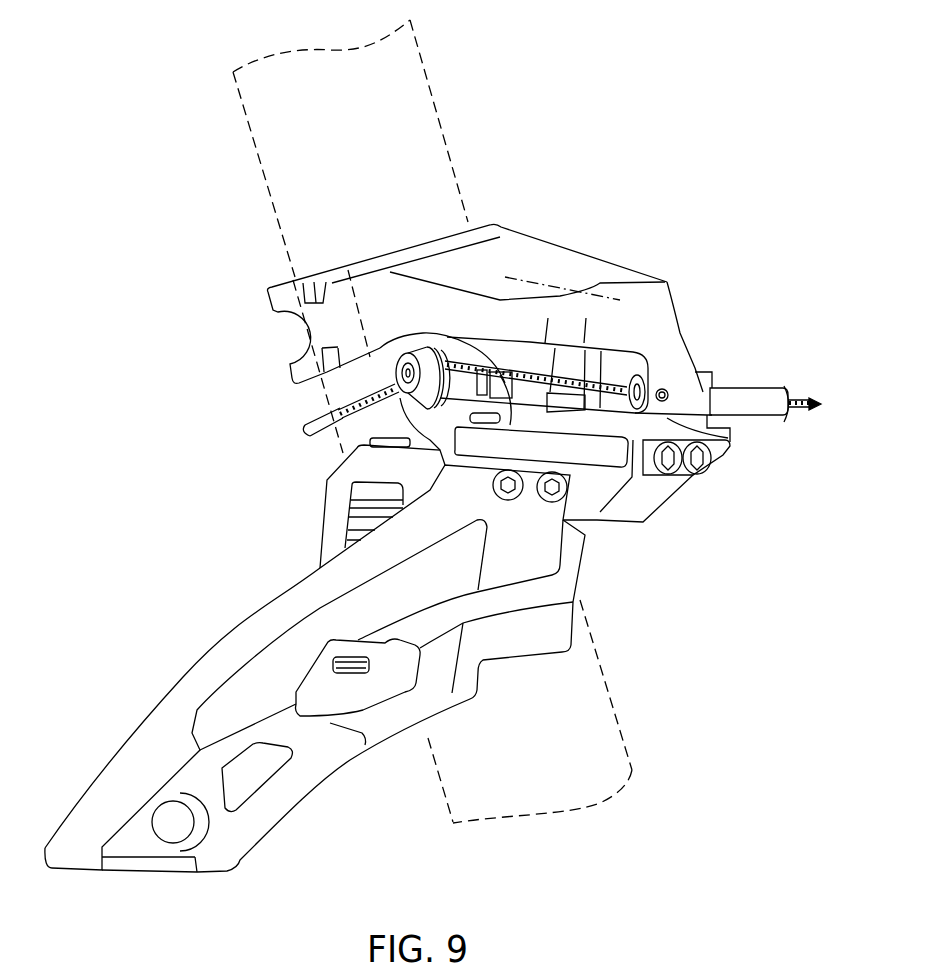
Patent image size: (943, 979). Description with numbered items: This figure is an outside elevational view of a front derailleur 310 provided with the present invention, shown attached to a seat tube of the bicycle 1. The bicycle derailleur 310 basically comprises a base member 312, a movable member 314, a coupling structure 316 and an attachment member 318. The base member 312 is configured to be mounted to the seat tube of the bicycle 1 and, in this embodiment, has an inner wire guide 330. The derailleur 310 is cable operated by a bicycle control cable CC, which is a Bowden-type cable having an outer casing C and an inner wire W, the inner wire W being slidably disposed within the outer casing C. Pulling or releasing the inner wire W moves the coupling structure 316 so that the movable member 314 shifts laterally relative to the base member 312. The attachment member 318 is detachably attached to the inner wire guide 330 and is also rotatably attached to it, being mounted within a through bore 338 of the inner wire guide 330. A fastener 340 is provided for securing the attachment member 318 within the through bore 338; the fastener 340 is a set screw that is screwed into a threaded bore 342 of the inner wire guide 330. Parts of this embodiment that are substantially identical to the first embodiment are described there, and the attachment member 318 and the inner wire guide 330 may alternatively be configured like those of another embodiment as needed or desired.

The bicycle 1 is at (258, 161).
The front derailleur 310 is at (542, 176).
The base member 312 is at (594, 243).
The movable member 314 is at (259, 617).
The coupling structure 316 is at (394, 417).
The attachment member 318 is at (630, 377).
The inner wire guide 330 is at (698, 363).
The through bore 338 is at (592, 432).
The fastener 340 is at (729, 439).
The threaded bore 342 is at (662, 388).
The control cable CC is at (733, 389).
The outer casing C is at (775, 388).
The inner wire W is at (797, 398).